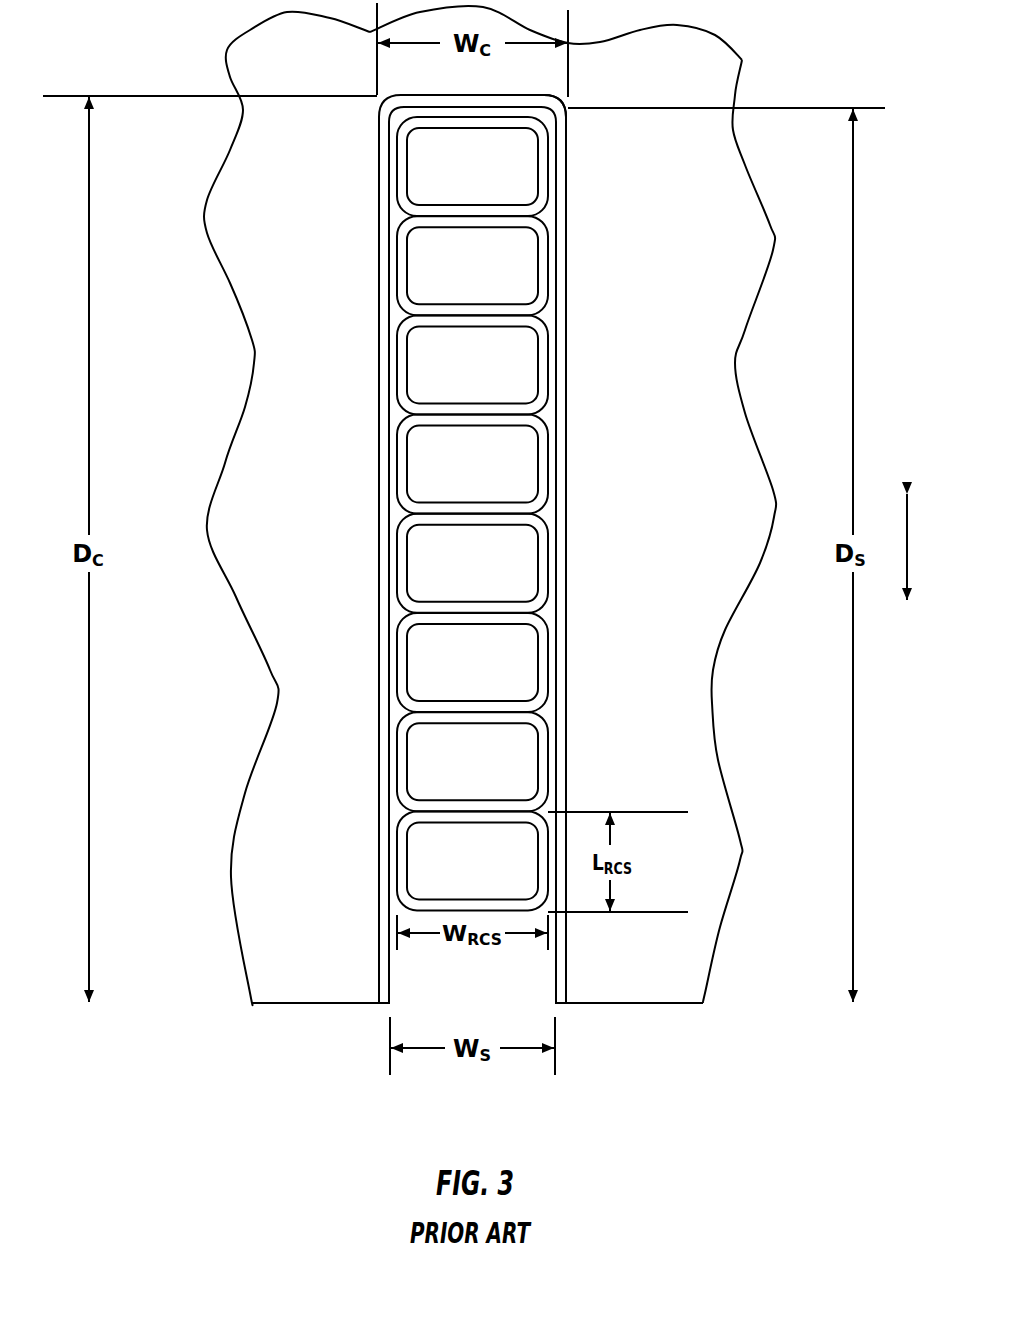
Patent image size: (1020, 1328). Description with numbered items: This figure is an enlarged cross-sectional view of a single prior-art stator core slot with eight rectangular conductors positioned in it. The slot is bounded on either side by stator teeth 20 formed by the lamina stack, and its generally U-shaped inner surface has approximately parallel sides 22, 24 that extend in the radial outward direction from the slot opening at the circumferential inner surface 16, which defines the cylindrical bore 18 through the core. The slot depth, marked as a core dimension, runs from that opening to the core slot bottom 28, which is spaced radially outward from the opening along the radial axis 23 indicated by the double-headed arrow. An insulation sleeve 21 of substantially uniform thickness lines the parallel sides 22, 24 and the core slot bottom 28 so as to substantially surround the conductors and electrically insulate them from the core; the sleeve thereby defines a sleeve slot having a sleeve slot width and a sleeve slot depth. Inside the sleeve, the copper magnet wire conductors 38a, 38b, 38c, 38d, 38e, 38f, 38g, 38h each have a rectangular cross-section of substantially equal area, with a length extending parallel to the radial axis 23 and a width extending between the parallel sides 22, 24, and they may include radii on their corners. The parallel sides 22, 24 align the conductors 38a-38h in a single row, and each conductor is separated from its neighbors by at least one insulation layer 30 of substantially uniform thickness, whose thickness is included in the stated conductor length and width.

The circumferential inner surface 16 is at (319, 1004).
The cylindrical bore 18 is at (625, 1151).
The stator teeth 20 is at (282, 543).
The insulation sleeve 21 is at (384, 300).
The core slot side 22 is at (386, 956).
The radial axis 23 is at (907, 538).
The core slot side 24 is at (558, 952).
The core slot bottom 28 is at (530, 97).
The insulation layer 30 is at (400, 162).
The rectangular conductor 38a is at (488, 877).
The rectangular conductor 38b is at (488, 778).
The rectangular conductor 38c is at (488, 679).
The rectangular conductor 38d is at (488, 580).
The rectangular conductor 38e is at (488, 481).
The rectangular conductor 38f is at (488, 381).
The rectangular conductor 38g is at (488, 282).
The rectangular conductor 38h is at (488, 183).